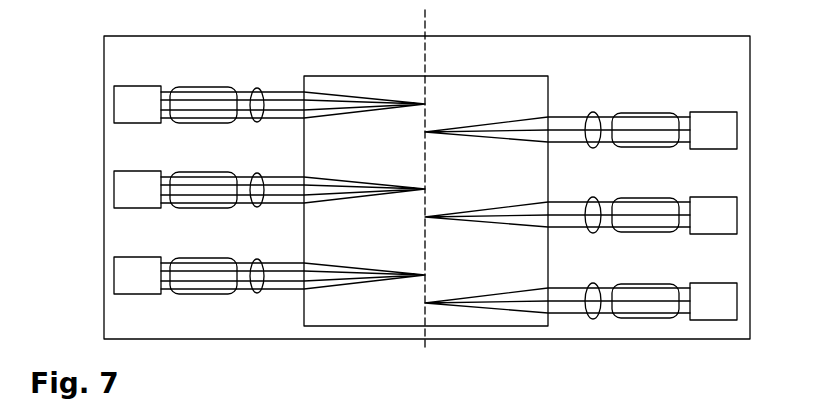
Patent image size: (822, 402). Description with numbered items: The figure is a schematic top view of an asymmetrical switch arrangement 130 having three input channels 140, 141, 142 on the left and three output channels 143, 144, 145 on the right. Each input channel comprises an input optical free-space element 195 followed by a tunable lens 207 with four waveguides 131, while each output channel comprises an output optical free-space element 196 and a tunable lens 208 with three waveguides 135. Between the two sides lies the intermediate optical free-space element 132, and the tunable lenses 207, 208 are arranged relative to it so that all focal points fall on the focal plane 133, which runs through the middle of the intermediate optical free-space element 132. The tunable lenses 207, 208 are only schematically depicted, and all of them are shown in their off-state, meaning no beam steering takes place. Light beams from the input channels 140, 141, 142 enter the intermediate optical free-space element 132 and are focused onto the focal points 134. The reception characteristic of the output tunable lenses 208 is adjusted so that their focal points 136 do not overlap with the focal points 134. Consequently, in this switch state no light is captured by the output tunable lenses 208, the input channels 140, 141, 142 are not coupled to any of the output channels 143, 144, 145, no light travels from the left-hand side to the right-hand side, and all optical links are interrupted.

The asymmetrical switch arrangement 130 is at (348, 47).
The waveguides 131 is at (254, 88).
The intermediate optical free-space element 132 is at (452, 328).
The focal plane 133 is at (426, 21).
The focal points 134 is at (426, 104).
The waveguides 135 is at (597, 81).
The focal points 136 is at (427, 133).
The input channel 140 is at (114, 105).
The input channel 141 is at (114, 190).
The input channel 142 is at (114, 276).
The output channel 143 is at (737, 130).
The output channel 144 is at (737, 215).
The output channel 145 is at (737, 301).
The input optical free-space element 195 is at (116, 86).
The output optical free-space element 196 is at (731, 81).
The tunable lens 207 is at (180, 87).
The tunable lens 208 is at (661, 113).